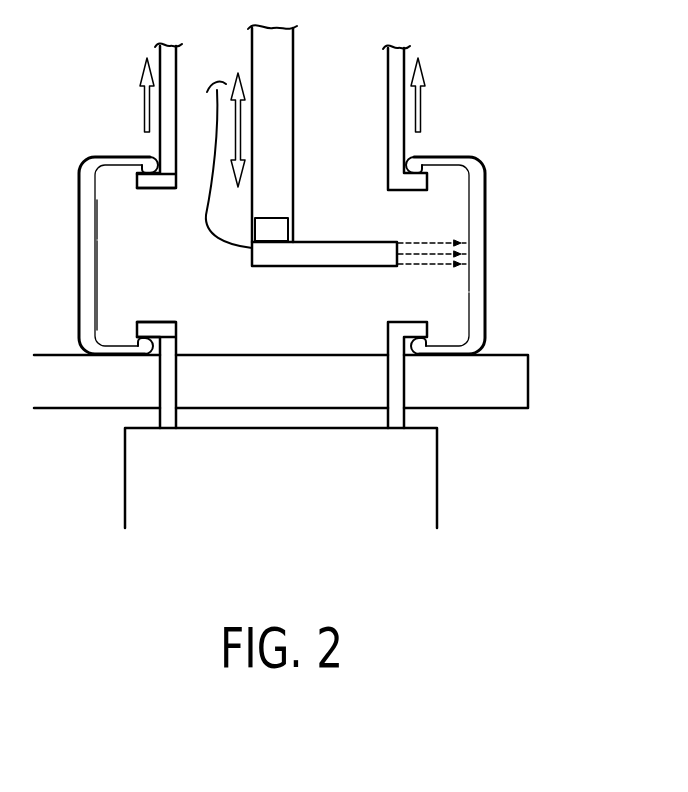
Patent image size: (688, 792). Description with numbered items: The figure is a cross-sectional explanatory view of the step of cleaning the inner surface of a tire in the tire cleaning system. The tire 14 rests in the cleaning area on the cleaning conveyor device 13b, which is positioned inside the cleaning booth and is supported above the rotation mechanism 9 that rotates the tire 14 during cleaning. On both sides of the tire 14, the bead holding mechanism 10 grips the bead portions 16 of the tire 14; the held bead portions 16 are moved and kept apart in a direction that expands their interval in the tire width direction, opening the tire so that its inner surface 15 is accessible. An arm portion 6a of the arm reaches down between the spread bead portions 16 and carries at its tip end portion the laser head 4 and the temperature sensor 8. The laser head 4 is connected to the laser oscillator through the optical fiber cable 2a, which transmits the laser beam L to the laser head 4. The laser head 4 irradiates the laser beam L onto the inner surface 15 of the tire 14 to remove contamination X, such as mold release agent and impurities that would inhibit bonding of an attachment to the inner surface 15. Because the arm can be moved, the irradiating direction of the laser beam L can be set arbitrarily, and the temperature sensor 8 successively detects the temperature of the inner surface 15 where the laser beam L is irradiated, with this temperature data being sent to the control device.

The optical fiber cable 2a is at (209, 117).
The laser head 4 is at (333, 257).
The arm portion 6a is at (288, 113).
The temperature sensor 8 is at (278, 221).
The rotation mechanism 9 is at (423, 483).
The bead holding mechanism 10 is at (402, 147).
The cleaning conveyor device 13b is at (498, 362).
The tire 14 is at (518, 214).
The inner surface 15 is at (97, 285).
The bead portion 16 is at (153, 165).
The laser beam L is at (418, 243).
The contamination X is at (97, 245).